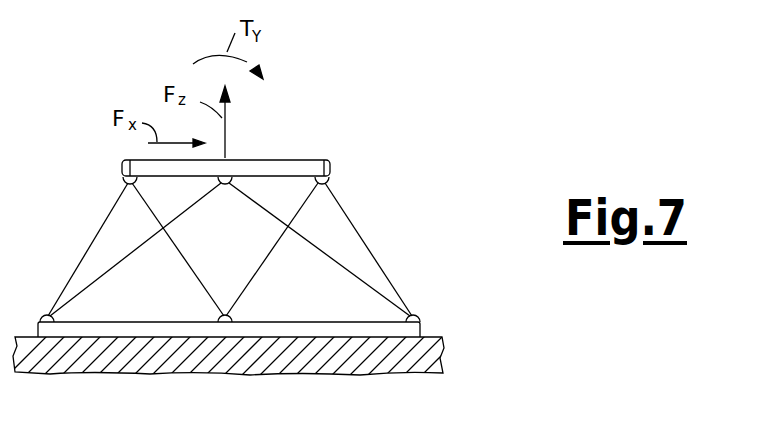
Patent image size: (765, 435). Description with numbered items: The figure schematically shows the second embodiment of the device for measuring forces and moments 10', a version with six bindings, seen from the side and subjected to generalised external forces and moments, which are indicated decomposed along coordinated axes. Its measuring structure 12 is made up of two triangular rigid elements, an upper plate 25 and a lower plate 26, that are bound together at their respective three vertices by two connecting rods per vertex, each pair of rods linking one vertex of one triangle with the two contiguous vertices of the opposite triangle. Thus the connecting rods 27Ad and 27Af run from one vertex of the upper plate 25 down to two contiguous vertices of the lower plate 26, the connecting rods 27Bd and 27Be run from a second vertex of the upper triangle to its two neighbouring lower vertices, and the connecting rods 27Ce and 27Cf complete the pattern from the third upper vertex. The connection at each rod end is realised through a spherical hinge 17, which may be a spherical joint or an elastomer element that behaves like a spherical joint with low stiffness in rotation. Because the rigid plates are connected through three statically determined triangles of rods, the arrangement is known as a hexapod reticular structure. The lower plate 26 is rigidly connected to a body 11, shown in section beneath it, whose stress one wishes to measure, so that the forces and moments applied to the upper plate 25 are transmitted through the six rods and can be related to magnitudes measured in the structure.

The device for measuring forces and moments 10' is at (445, 99).
The body 11 is at (405, 368).
The measuring structure 12 is at (392, 236).
The spherical hinge 17 is at (122, 159).
The upper plate 25 is at (287, 160).
The lower plate 26 is at (410, 331).
The connecting rod 27Ce is at (147, 205).
The connecting rod 27Cf is at (277, 256).
The connecting rod 27Be is at (82, 268).
The connecting rod 27Bd is at (80, 295).
The connecting rod 27Ad is at (357, 278).
The connecting rod 27Af is at (391, 284).